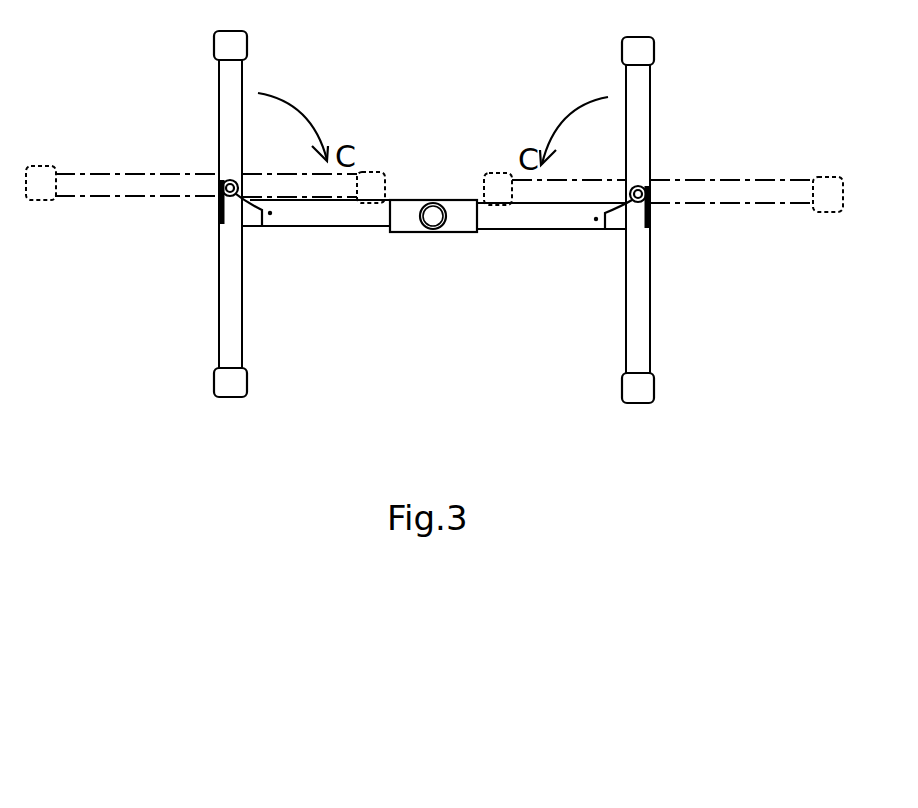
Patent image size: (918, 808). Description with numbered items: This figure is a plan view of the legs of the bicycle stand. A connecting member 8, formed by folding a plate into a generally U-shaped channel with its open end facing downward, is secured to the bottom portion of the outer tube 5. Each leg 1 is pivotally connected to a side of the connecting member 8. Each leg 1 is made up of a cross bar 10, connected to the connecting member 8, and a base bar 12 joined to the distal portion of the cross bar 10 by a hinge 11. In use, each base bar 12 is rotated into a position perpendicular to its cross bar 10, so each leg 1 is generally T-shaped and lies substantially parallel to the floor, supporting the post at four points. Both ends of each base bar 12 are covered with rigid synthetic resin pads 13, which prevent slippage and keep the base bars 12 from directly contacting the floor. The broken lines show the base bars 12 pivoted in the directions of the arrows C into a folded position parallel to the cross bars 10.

The leg 1 is at (306, 232).
The outer tube 5 is at (427, 202).
The connecting member 8 is at (459, 233).
The cross bar 10 is at (340, 228).
The hinge 11 is at (235, 220).
The base bar 12 is at (219, 98).
The rigid synthetic resin pad 13 is at (219, 44).